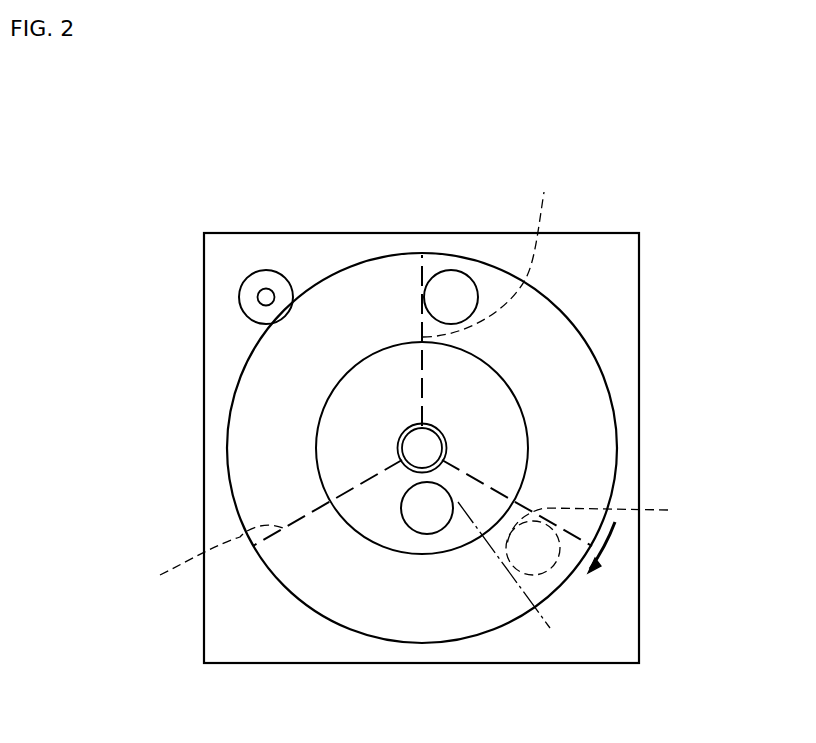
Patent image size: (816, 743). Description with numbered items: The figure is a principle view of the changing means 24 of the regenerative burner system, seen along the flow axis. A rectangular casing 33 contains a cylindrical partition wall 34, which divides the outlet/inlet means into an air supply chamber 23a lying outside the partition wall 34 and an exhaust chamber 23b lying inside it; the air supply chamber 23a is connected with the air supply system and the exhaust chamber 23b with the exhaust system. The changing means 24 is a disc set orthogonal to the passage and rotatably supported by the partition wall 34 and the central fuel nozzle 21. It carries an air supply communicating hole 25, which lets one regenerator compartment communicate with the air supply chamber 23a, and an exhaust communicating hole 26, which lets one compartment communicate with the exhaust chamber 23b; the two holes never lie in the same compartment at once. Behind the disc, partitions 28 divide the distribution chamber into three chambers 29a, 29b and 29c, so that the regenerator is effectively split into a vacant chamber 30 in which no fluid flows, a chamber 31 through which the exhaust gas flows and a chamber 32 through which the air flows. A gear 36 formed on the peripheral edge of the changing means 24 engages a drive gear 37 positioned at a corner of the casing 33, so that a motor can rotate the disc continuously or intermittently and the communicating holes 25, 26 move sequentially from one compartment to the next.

The fuel nozzle 21 is at (432, 448).
The air supply chamber 23a is at (300, 438).
The exhaust chamber 23b is at (389, 438).
The changing means 24 is at (250, 483).
The air supply communicating hole 25 is at (455, 284).
The exhaust communicating hole 26 is at (418, 522).
The partitions 28 is at (414, 391).
The chamber of the distribution chamber 29a is at (253, 340).
The chamber of the distribution chamber 29b is at (241, 554).
The chamber of the distribution chamber 29c is at (602, 413).
The vacant chamber 30 is at (290, 373).
The exhaust gas chamber 31 is at (290, 558).
The air chamber 32 is at (560, 338).
The casing 33 is at (205, 433).
The partition wall 34 is at (527, 424).
The gear 36 is at (320, 281).
The drive gear 37 is at (266, 270).